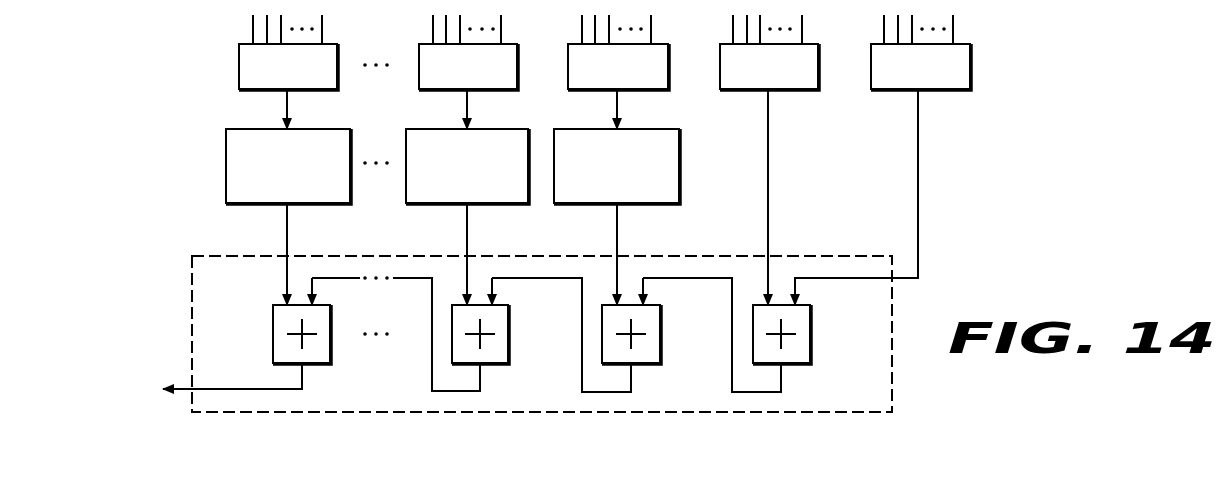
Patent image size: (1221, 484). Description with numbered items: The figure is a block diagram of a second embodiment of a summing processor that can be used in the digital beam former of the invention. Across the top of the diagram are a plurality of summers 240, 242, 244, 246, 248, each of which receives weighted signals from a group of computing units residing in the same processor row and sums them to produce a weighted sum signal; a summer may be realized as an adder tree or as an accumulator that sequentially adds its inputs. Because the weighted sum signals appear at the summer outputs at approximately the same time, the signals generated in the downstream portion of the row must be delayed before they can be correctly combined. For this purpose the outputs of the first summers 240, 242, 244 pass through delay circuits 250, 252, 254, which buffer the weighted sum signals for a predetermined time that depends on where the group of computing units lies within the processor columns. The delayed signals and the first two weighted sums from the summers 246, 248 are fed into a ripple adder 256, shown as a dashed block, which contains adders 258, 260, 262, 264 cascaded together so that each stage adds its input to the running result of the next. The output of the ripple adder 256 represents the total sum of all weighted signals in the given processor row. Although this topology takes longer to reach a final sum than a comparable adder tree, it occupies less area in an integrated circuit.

The summer 240 is at (239, 63).
The summer 242 is at (445, 90).
The summer 244 is at (595, 90).
The summer 246 is at (749, 90).
The summer 248 is at (900, 90).
The delay circuit 250 is at (226, 161).
The delay circuit 252 is at (440, 204).
The delay circuit 254 is at (590, 204).
The ripple adder 256 is at (192, 281).
The adder 258 is at (273, 332).
The adder 260 is at (509, 334).
The adder 262 is at (661, 334).
The adder 264 is at (811, 334).